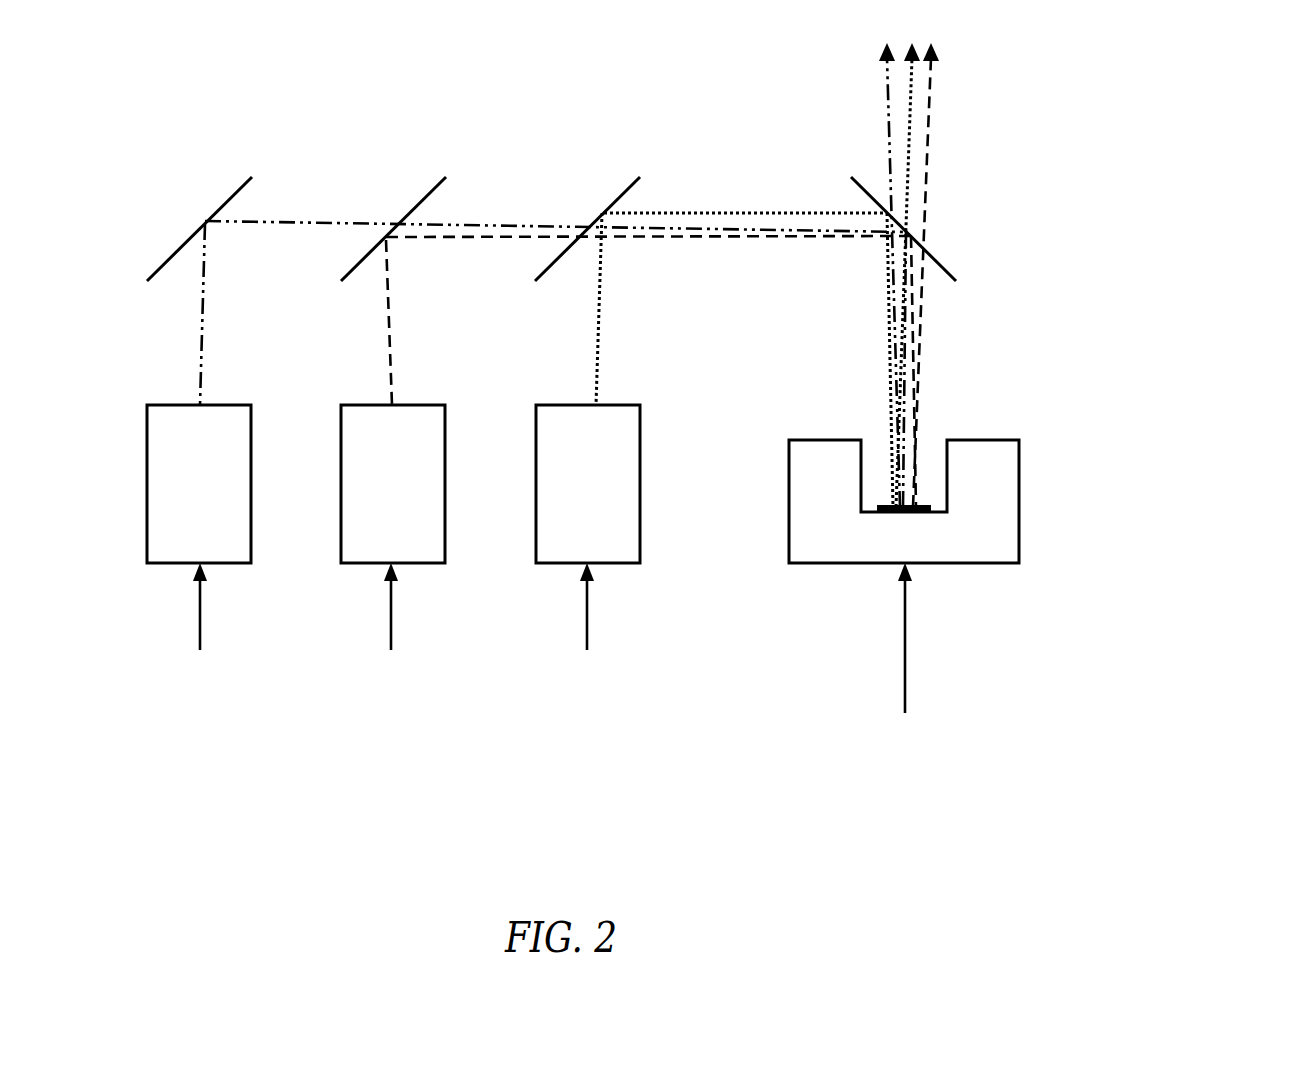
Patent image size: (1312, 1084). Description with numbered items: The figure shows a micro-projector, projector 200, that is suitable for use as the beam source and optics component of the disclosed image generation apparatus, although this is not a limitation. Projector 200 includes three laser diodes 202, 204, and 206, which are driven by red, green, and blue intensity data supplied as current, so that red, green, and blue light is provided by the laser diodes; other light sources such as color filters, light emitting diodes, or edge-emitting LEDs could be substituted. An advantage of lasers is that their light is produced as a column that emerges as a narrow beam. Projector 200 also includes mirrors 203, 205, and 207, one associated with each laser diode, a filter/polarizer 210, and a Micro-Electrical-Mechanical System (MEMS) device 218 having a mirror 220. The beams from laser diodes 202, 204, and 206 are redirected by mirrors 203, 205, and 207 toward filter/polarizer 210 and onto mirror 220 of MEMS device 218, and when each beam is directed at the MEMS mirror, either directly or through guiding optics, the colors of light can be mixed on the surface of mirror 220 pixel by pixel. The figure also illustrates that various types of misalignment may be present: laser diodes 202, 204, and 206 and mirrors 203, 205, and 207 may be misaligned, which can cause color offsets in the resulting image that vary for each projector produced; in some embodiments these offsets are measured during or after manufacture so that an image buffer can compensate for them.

The projector 200 is at (1212, 692).
The laser diode 202 is at (232, 565).
The mirror 203 is at (247, 181).
The laser diode 204 is at (427, 565).
The mirror 205 is at (441, 181).
The laser diode 206 is at (622, 565).
The mirror 207 is at (635, 181).
The filter/polarizer 210 is at (951, 276).
The Micro-Electrical-Mechanical System (MEMS) device 218 is at (814, 566).
The mirror 220 is at (889, 500).